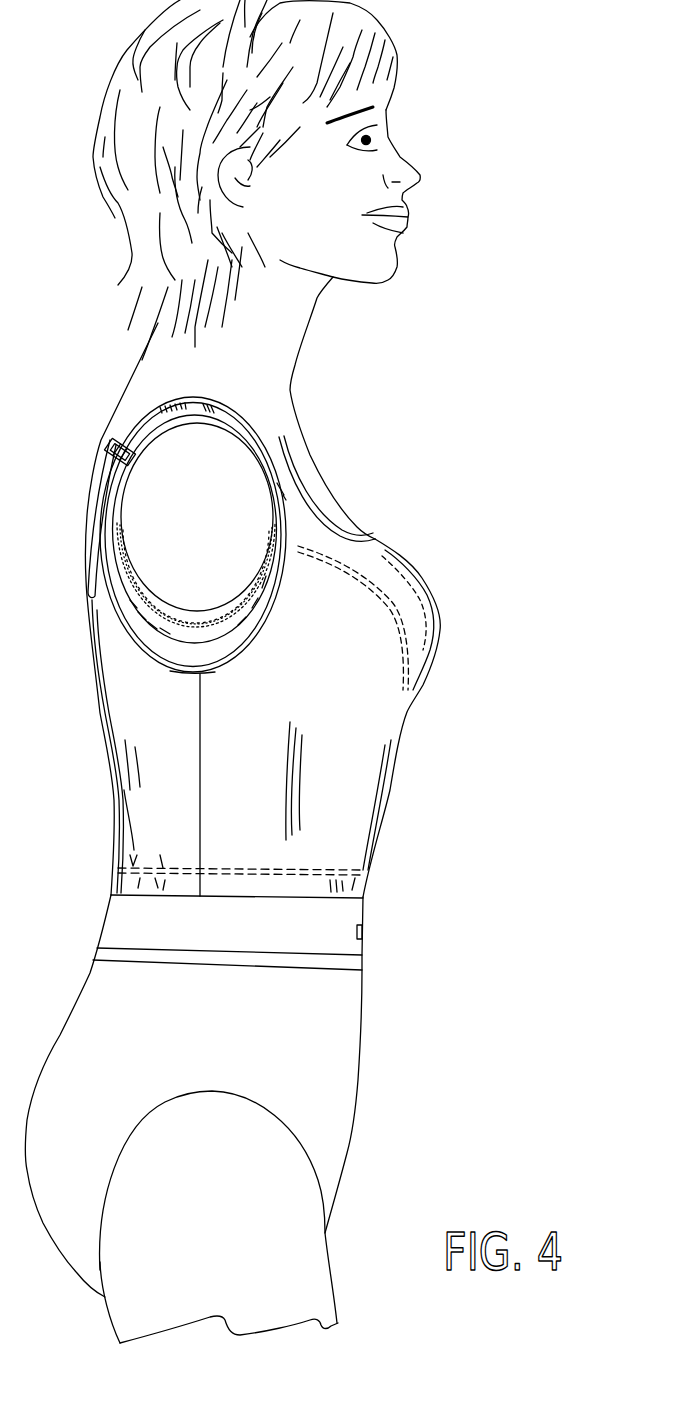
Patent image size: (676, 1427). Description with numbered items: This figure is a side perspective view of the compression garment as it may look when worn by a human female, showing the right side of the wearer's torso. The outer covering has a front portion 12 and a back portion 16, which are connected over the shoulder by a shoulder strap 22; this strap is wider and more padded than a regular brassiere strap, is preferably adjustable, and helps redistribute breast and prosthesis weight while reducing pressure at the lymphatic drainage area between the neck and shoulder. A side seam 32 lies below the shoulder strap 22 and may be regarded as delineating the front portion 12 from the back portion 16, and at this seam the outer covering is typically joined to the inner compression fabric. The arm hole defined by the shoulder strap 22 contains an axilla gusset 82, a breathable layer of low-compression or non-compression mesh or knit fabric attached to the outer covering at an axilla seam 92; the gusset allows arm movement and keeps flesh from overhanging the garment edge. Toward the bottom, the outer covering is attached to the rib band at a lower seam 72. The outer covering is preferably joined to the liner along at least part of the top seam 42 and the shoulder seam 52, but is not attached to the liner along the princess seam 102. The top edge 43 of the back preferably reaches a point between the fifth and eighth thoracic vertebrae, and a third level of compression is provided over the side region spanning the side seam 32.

The front portion 12 is at (350, 756).
The back portion 16 is at (173, 782).
The shoulder strap 22 is at (202, 407).
The side seam 32 is at (200, 770).
The top seam 42 is at (320, 524).
The top edge 43 is at (88, 594).
The shoulder seam 52 is at (278, 483).
The lower seam 72 is at (260, 864).
The axilla gusset 82 is at (237, 638).
The axilla seam 92 is at (217, 675).
The princess seam 102 is at (397, 612).